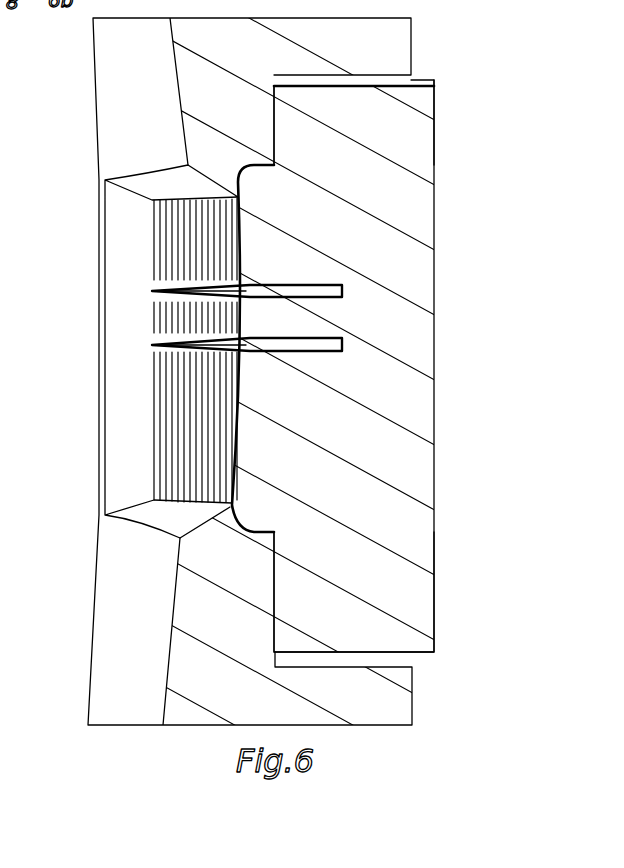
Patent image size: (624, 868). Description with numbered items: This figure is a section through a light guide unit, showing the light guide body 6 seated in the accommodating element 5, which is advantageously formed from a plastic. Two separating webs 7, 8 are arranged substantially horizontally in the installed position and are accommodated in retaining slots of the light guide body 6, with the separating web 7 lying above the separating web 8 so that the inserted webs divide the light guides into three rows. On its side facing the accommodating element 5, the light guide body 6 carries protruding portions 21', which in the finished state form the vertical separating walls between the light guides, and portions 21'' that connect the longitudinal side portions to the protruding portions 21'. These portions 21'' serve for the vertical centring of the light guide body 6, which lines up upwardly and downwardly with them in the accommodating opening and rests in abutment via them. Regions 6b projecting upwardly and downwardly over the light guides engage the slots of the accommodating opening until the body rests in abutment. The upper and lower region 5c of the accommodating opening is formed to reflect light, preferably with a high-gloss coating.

The accommodating element 5 is at (207, 597).
The upper and lower region 5c is at (175, 183).
The protruding portions 21' is at (144, 350).
The light guide body 6 is at (342, 455).
The projecting regions 6b is at (352, 133).
The connecting portions 21'' is at (361, 314).
The separating web 8 is at (279, 285).
The separating web 7 is at (308, 352).